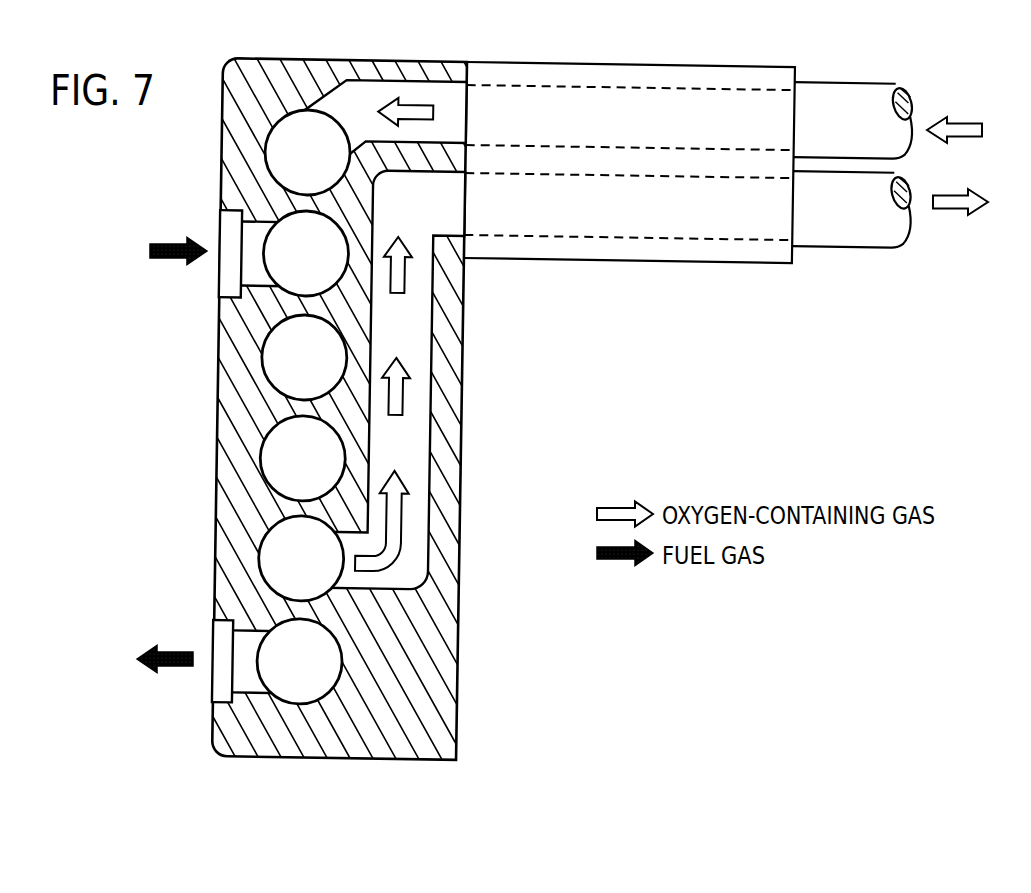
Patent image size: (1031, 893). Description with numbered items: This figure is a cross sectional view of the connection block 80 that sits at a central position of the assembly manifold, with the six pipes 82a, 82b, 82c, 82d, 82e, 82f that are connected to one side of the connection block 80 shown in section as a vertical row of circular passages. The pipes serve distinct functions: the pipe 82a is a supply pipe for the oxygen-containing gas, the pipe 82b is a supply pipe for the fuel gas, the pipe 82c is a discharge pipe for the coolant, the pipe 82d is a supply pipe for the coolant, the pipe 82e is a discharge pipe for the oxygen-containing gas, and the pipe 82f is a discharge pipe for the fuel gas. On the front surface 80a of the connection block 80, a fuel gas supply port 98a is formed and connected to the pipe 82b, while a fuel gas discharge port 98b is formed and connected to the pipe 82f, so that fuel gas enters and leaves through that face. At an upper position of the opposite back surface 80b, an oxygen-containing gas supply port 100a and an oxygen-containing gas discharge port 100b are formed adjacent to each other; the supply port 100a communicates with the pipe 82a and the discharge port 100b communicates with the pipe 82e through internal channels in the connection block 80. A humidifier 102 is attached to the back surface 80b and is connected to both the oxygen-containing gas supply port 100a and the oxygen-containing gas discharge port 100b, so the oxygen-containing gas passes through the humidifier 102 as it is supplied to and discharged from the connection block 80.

The connection block 80 is at (293, 58).
The one surface (front surface) 80a is at (211, 717).
The opposite surface (back surface) 80b is at (457, 740).
The pipe 82a is at (282, 148).
The pipe 82b is at (282, 242).
The pipe 82c is at (276, 348).
The pipe 82d is at (271, 453).
The pipe 82e is at (259, 547).
The pipe 82f is at (254, 648).
The fuel gas supply port 98a is at (229, 275).
The fuel gas discharge port 98b is at (220, 688).
The oxygen-containing gas supply port 100a is at (452, 108).
The oxygen-containing gas discharge port 100b is at (458, 202).
The humidifier 102 is at (593, 258).